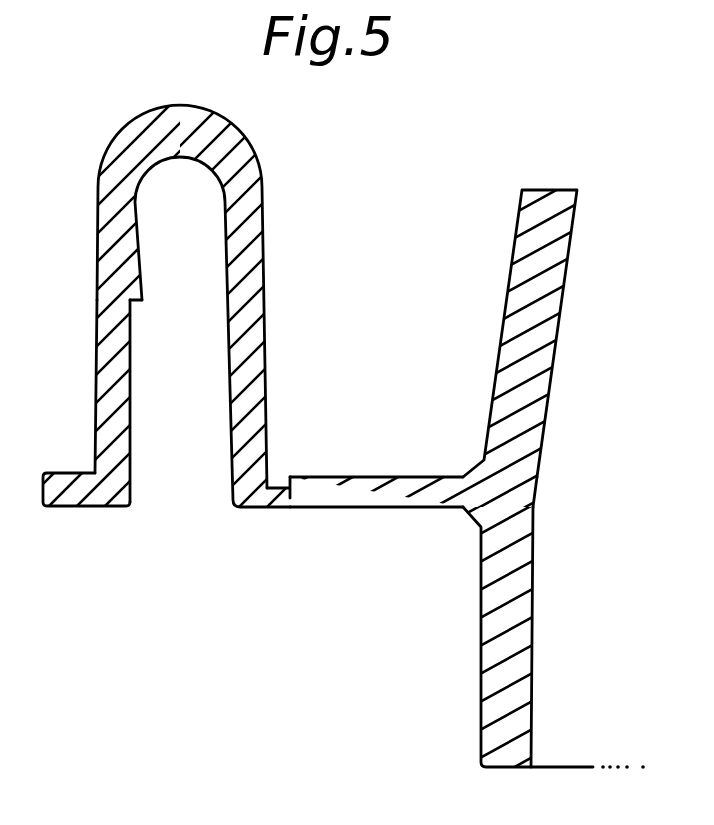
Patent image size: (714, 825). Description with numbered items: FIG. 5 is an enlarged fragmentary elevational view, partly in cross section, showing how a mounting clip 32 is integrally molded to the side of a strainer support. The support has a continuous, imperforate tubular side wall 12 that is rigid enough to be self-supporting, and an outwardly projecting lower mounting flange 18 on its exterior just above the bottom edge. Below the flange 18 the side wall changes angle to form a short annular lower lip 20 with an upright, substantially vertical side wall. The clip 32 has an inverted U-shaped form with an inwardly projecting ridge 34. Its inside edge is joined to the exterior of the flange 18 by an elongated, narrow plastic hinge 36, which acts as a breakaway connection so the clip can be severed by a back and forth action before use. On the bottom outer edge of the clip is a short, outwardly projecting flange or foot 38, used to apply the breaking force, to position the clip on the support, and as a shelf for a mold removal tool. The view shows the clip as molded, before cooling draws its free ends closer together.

The tubular side wall 12 is at (507, 360).
The lower mounting flange 18 is at (384, 494).
The lower lip 20 is at (488, 677).
The mounting clip 32 is at (248, 196).
The inwardly projecting ridge 34 is at (140, 300).
The plastic hinge 36 is at (279, 498).
The foot 38 is at (62, 498).